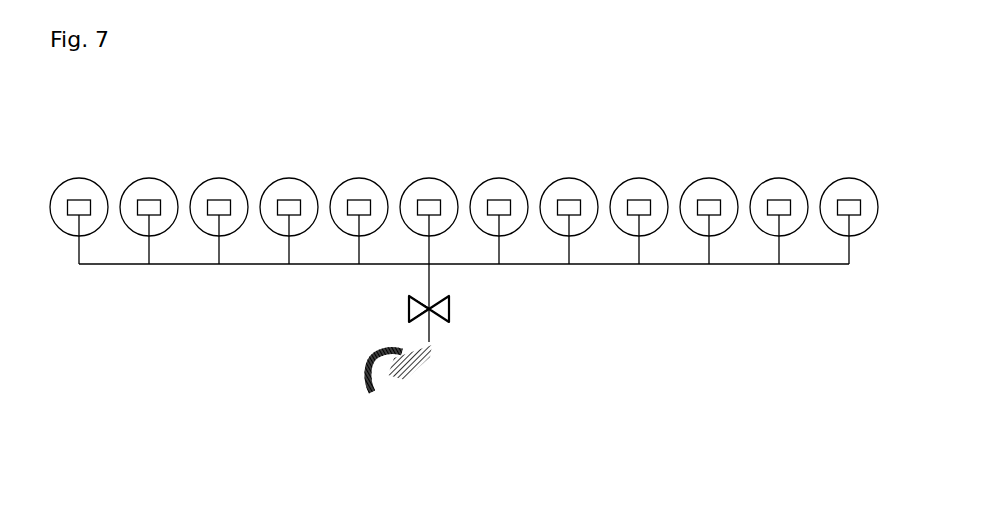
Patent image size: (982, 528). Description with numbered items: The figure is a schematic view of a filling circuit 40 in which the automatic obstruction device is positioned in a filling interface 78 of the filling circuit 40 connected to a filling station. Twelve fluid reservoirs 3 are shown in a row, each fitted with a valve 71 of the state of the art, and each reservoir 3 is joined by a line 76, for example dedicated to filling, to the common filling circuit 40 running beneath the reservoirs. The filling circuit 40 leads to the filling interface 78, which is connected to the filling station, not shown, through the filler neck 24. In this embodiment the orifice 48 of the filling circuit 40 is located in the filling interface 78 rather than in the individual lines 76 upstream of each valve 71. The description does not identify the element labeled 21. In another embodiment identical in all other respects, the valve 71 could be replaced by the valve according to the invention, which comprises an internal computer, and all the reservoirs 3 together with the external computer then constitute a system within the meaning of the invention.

The fluid reservoir 3 is at (290, 178).
The valve 71 is at (302, 207).
The line 76 is at (290, 260).
The filling circuit 40 is at (720, 264).
The filling interface 78 is at (428, 283).
The valve 21 is at (449, 308).
The orifice 48 is at (434, 318).
The filler neck 24 is at (418, 382).